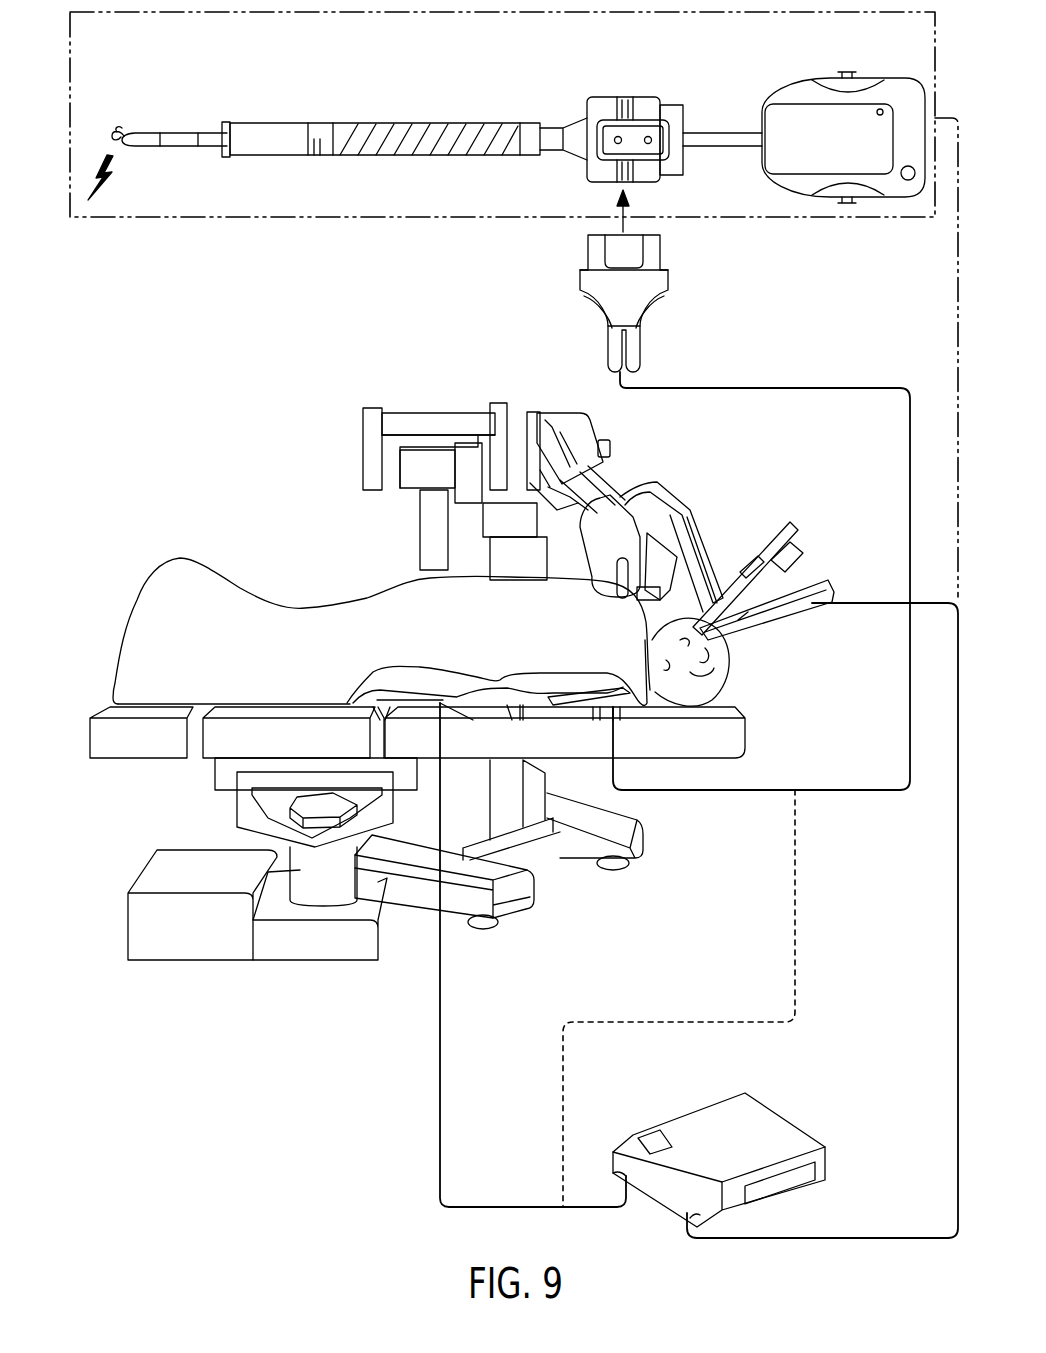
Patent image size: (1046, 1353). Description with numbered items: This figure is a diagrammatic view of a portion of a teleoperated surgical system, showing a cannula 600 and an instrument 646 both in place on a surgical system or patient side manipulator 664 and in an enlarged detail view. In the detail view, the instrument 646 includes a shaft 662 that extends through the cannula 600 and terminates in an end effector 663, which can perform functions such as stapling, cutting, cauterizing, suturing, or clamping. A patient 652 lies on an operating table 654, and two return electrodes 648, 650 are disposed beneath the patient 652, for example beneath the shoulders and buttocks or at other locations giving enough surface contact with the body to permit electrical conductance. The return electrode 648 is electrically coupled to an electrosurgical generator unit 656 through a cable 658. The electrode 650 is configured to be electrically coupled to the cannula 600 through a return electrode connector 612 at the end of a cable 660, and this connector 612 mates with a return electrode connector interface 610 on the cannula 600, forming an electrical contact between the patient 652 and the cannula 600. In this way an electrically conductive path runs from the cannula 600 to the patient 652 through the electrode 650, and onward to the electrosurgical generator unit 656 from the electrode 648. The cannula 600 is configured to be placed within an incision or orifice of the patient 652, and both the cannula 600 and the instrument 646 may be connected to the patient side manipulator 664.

The cannula 600 is at (413, 124).
The return electrode connector interface 610 is at (620, 106).
The return electrode connector 612 is at (668, 276).
The instrument 646 is at (696, 115).
The return electrode 648 is at (460, 708).
The return electrode 650 is at (597, 712).
The patient 652 is at (134, 604).
The operating table 654 is at (87, 748).
The electrosurgical generator unit 656 is at (766, 1104).
The cable 658 is at (443, 1012).
The cable 660 is at (757, 387).
The shaft 662 is at (693, 150).
The end effector 663 is at (143, 132).
The patient side manipulator 664 is at (455, 414).